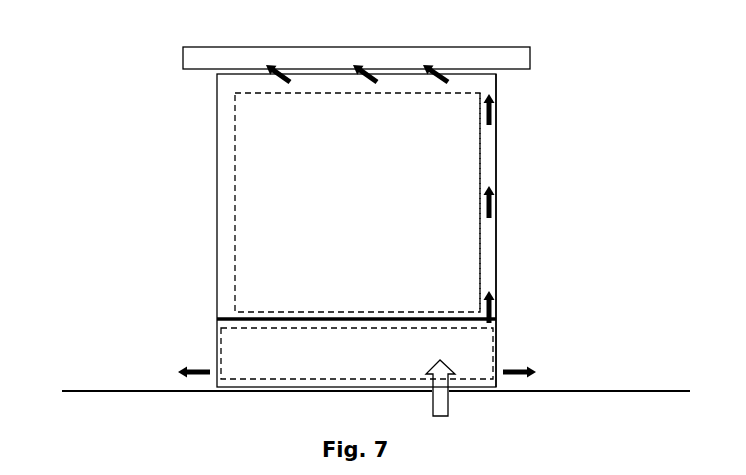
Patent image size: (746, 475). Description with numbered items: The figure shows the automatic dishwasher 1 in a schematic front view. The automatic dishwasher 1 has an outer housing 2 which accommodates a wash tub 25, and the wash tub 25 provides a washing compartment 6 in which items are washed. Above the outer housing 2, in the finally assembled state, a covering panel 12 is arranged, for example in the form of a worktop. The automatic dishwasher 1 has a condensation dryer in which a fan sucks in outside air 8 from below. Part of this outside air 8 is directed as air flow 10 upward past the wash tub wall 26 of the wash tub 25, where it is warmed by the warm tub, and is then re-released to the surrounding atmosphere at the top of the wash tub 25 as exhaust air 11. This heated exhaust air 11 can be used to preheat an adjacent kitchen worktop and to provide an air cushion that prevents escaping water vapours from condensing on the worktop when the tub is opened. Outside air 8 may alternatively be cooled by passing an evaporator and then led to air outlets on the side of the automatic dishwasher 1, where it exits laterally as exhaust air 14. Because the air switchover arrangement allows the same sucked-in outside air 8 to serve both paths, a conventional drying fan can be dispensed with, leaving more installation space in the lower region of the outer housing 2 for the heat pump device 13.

The automatic dishwasher 1 is at (590, 74).
The outer housing 2 is at (217, 138).
The washing compartment 6 is at (357, 202).
The outside air 8 is at (446, 407).
The air flow 10 is at (496, 297).
The exhaust air 11 is at (272, 56).
The covering panel 12 is at (356, 60).
The heat pump device 13 is at (357, 353).
The exhaust air 14 is at (172, 372).
The wash tub 25 is at (417, 174).
The wash tub wall 26 is at (497, 205).